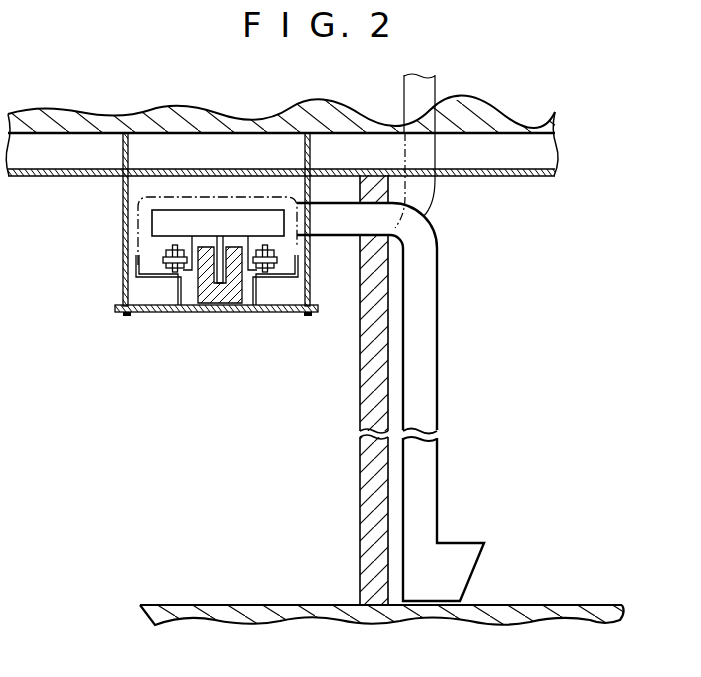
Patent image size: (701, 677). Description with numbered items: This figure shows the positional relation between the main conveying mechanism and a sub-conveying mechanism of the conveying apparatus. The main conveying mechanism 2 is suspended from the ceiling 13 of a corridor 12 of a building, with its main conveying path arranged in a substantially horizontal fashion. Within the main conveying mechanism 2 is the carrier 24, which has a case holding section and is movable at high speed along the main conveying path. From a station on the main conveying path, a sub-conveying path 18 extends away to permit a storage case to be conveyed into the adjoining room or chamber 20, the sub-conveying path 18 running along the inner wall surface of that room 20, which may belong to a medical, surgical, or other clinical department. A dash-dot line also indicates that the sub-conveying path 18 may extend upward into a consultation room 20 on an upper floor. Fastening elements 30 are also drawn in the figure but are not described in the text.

The main conveying mechanism 2 is at (142, 278).
The corridor 12 is at (275, 440).
The ceiling 13 is at (495, 180).
The sub-conveying path 18 is at (438, 102).
The room or chamber 20 is at (551, 440).
The carrier 24 is at (152, 228).
The fastening bolt 30 is at (167, 262).